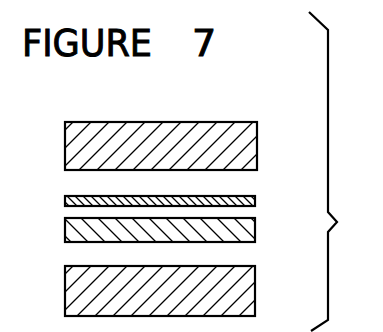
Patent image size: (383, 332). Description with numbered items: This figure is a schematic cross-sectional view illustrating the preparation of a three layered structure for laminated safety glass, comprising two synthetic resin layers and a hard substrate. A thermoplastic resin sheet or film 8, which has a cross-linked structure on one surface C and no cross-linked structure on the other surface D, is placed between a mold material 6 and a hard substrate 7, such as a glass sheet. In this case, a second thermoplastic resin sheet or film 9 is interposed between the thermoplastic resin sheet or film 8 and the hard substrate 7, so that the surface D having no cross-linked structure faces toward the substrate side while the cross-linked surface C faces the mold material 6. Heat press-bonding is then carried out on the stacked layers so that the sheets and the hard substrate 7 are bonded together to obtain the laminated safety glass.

The mold material 6 is at (257, 147).
The hard substrate 7 is at (255, 296).
The thermoplastic resin sheet or film 8 is at (255, 201).
The intermediate layer 9 is at (255, 241).
The surface having a cross-linked structure C is at (238, 192).
The surface having no cross-linked structure D is at (255, 216).